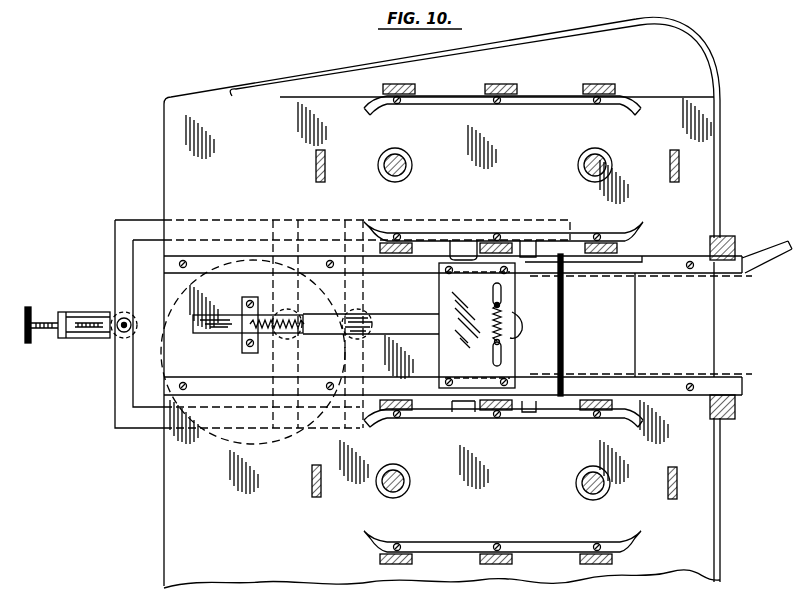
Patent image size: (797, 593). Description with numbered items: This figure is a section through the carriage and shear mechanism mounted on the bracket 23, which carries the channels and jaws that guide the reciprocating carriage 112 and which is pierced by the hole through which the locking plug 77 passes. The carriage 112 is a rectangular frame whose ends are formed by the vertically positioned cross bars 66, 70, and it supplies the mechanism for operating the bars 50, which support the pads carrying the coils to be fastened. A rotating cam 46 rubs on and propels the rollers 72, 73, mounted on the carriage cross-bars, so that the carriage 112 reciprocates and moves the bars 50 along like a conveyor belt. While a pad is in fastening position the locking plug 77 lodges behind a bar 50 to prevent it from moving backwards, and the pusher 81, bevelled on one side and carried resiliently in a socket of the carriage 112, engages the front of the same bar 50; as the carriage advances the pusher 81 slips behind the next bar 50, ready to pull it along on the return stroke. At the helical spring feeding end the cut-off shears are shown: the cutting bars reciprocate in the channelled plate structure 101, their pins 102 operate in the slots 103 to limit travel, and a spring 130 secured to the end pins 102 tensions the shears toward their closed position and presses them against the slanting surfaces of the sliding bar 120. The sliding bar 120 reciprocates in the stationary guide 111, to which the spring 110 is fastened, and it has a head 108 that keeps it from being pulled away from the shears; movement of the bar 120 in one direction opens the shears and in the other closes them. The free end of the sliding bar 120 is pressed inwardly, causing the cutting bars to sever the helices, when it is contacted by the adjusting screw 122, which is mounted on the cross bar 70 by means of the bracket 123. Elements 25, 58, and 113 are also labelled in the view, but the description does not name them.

The bracket 23 is at (168, 108).
The hole 25 is at (393, 160).
The cam 46 is at (250, 441).
The bar 50 is at (488, 90).
The guide rail 58 is at (608, 230).
The cross bar 66 is at (564, 326).
The cross bar 70 is at (116, 398).
The roller 72 is at (361, 316).
The roller 73 is at (118, 337).
The locking plug 77 is at (462, 246).
The pusher 81 is at (528, 246).
The plate structure 101 is at (438, 358).
The pin 102 is at (500, 307).
The slot 103 is at (495, 300).
The head 108 is at (514, 330).
The spring 110 is at (294, 321).
The stationary guide 111 is at (250, 348).
The carriage 112 is at (141, 222).
The rail 113 is at (598, 276).
The sliding bar 120 is at (227, 334).
The adjusting screw 122 is at (30, 310).
The bracket 123 is at (75, 311).
The spring 130 is at (503, 322).